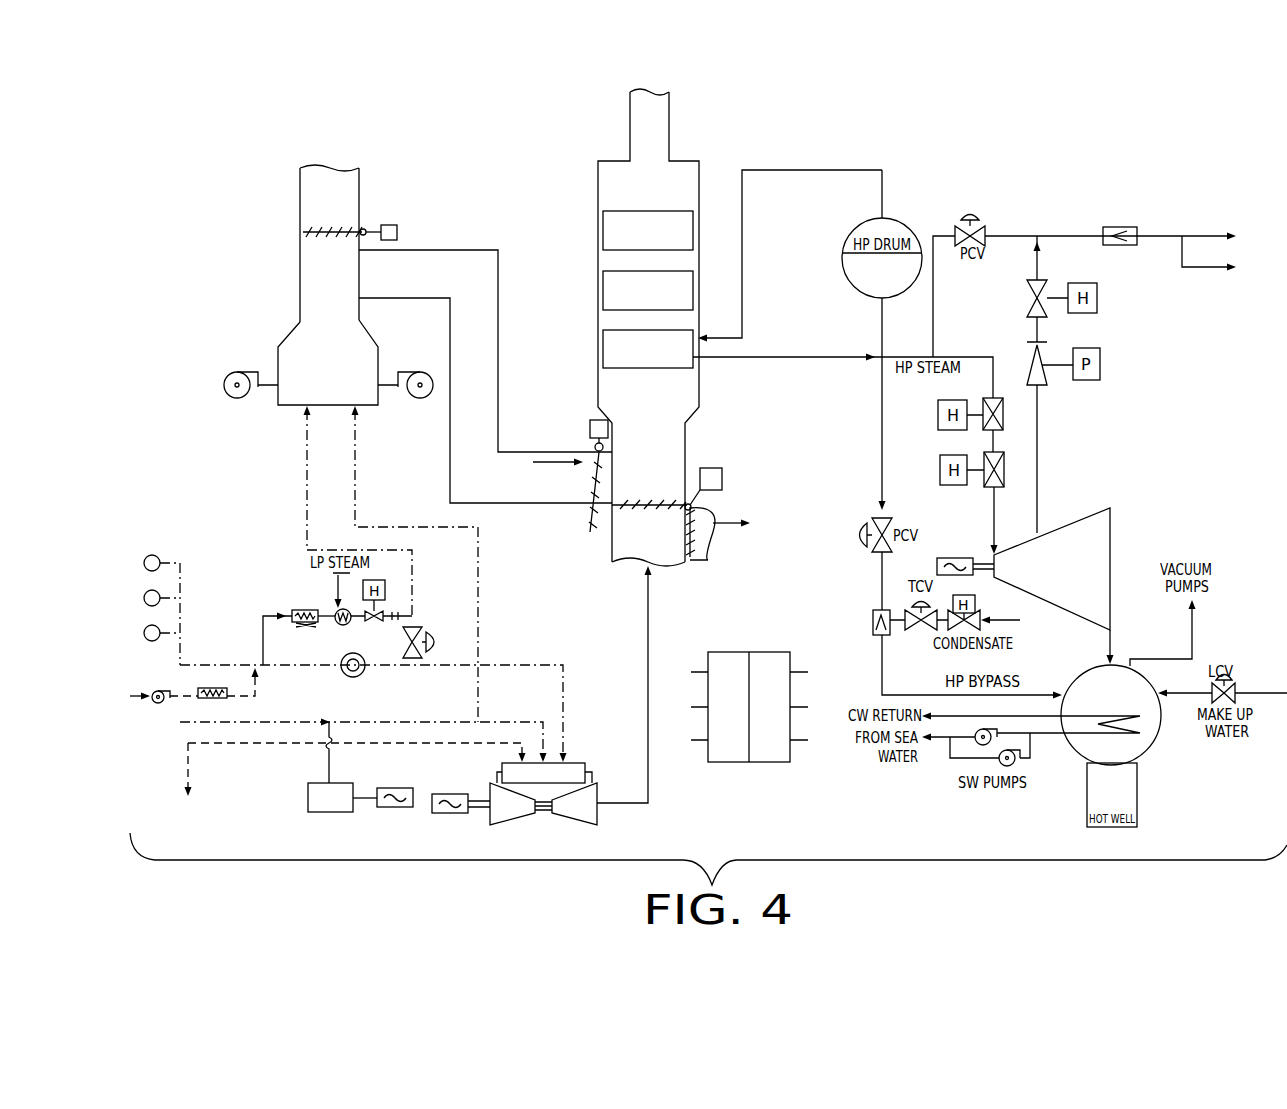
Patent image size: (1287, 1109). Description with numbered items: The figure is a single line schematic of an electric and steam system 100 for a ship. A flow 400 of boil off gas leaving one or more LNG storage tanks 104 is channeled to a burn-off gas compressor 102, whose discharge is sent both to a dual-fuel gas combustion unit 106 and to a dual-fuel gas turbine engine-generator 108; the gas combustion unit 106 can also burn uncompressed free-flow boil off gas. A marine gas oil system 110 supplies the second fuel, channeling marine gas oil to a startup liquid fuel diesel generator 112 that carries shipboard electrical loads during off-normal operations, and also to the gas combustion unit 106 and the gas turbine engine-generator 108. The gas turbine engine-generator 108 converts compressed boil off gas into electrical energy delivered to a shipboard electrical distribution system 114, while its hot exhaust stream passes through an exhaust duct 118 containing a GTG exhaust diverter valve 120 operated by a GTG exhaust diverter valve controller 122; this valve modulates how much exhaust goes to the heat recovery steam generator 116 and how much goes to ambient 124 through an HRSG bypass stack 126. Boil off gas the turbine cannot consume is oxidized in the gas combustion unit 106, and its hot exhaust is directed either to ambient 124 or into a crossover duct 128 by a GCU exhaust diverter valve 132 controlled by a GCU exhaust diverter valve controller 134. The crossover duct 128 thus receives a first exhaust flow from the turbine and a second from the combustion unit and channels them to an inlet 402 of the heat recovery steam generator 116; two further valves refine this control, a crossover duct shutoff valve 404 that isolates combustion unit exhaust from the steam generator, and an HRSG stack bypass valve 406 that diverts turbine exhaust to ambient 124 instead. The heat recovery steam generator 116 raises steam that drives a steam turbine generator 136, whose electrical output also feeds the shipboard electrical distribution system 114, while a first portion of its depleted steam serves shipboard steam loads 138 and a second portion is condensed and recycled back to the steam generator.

The electric and steam system 100 is at (292, 142).
The burn-off gas (BOG) compressor 102 is at (363, 672).
The LNG storage tanks 104 is at (158, 548).
The dual-fuel gas combustion unit (GCU) 106 is at (293, 335).
The dual-fuel gas turbine engine-generator (GTG) 108 is at (612, 826).
The marine gas oil (MGO) system 110 is at (162, 756).
The startup liquid fuel diesel generator 112 is at (308, 824).
The shipboard electrical distribution system 114 is at (746, 776).
The heat recovery steam generator (HRSG) 116 is at (599, 260).
The exhaust duct 118 is at (649, 607).
The GTG exhaust diverter valve 120 is at (692, 512).
The GTG exhaust diverter valve controller 122 is at (722, 467).
The ambient 124 is at (342, 135).
The HRSG bypass stack 126 is at (823, 559).
The crossover duct 128 is at (552, 464).
The GCU exhaust diverter valve 132 is at (320, 229).
The GCU exhaust diverter valve controller 134 is at (385, 225).
The steam turbine generator (STG) 136 is at (1112, 535).
The shipboard steam loads 138 is at (1176, 185).
The flow of boil off gas 400 is at (190, 665).
The inlet of heat recovery steam generator 402 is at (657, 443).
The crossover duct shutoff valve 404 is at (593, 526).
The HRSG stack bypass valve 406 is at (707, 553).